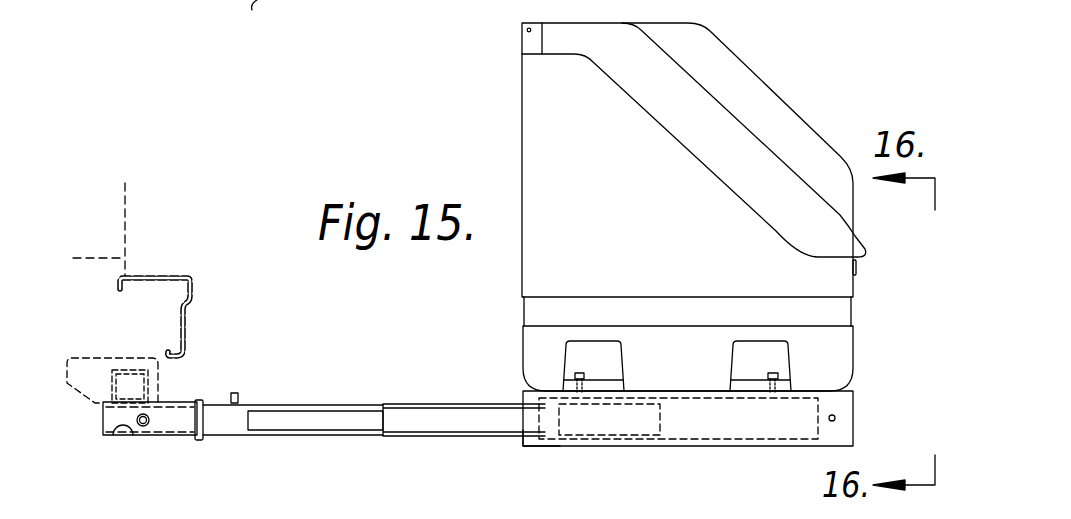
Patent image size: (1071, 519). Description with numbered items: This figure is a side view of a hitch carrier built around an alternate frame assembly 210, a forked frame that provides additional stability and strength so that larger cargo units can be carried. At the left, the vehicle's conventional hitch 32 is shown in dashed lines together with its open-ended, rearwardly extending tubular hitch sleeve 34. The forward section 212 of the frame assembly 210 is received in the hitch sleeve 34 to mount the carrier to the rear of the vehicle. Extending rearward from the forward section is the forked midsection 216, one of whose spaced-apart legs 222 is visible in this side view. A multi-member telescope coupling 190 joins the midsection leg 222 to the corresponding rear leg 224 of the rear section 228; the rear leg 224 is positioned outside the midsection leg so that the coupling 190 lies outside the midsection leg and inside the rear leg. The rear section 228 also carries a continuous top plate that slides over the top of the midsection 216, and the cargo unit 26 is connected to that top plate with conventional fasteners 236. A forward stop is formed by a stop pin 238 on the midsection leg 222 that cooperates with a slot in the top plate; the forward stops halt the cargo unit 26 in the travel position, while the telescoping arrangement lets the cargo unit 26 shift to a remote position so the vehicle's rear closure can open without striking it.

The cargo unit 26 is at (750, 85).
The hitch 32 is at (130, 348).
The hitch sleeve 34 is at (165, 440).
The multi-member telescope couplings 190 is at (390, 437).
The alternate frame assembly 210 is at (430, 350).
The forward section 212 is at (113, 438).
The forked midsection 216 is at (248, 475).
The midsection leg 222 is at (243, 413).
The rear leg 224 is at (841, 405).
The rear section 228 is at (520, 454).
The fasteners 236 is at (775, 372).
The stop pin 238 is at (233, 393).